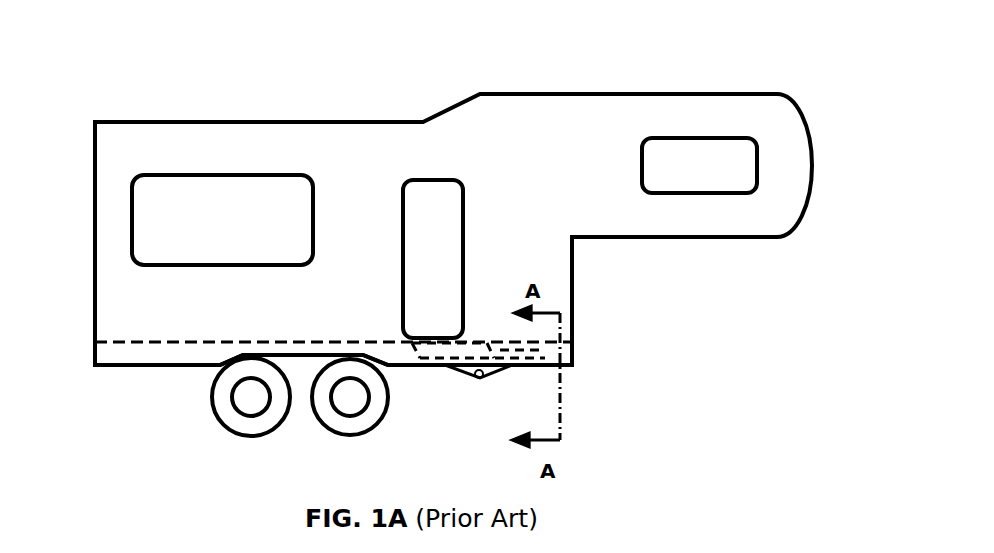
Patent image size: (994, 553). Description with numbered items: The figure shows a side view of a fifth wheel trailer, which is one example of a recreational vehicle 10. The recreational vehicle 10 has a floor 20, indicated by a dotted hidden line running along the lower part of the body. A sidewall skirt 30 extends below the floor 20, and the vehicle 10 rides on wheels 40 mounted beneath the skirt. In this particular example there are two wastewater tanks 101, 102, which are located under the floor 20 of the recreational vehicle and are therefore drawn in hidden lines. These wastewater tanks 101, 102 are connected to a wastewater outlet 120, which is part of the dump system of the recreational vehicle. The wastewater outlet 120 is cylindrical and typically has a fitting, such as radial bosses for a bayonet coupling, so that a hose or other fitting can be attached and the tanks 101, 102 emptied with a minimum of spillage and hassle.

The recreational vehicle 10 is at (114, 46).
The floor 20 is at (120, 342).
The sidewall skirt 30 is at (173, 356).
The wheels 40 is at (212, 393).
The wastewater tank 101 is at (573, 353).
The wastewater tank 102 is at (430, 357).
The wastewater outlet 120 is at (477, 380).